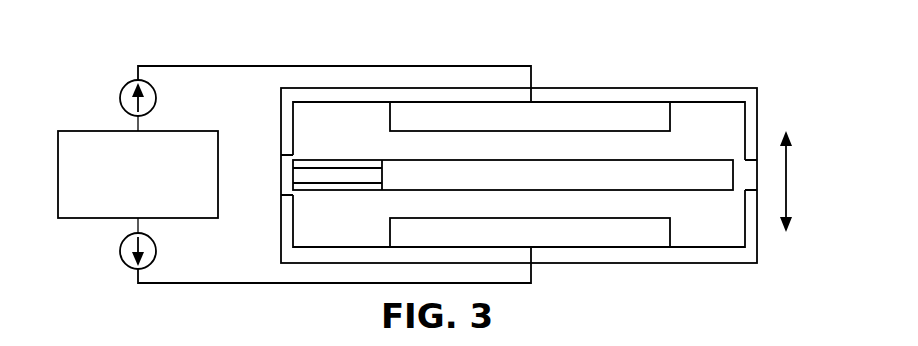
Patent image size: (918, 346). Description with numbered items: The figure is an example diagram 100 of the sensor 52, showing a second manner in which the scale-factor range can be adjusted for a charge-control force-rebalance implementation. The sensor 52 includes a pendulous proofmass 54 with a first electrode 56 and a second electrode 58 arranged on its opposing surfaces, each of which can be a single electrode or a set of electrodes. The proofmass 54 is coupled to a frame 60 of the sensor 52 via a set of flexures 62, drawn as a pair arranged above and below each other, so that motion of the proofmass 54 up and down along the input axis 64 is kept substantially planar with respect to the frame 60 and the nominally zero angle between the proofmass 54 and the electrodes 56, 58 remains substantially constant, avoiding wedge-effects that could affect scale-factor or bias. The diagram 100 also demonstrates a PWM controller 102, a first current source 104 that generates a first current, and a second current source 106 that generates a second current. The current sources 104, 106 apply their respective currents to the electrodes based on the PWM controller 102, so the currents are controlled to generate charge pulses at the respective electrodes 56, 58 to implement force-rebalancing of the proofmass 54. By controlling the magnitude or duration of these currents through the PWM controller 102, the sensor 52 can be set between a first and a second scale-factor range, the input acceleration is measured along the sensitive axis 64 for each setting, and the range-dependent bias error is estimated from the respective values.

The diagram 100 is at (114, 49).
The PWM controller 102 is at (117, 131).
The first current source 104 is at (123, 88).
The second current source 106 is at (128, 267).
The sensor 52 is at (316, 49).
The pendulous proofmass 54 is at (452, 160).
The first electrode 56 is at (652, 131).
The second electrode 58 is at (657, 218).
The frame 60 is at (646, 88).
The flexures 62 is at (318, 160).
The input axis 64 is at (788, 196).